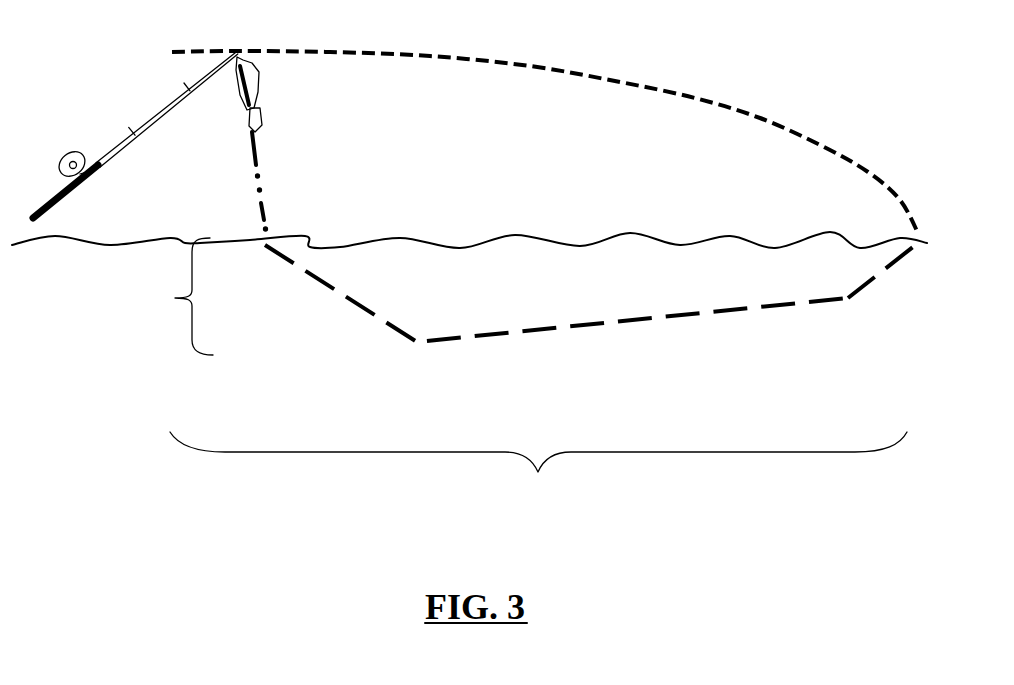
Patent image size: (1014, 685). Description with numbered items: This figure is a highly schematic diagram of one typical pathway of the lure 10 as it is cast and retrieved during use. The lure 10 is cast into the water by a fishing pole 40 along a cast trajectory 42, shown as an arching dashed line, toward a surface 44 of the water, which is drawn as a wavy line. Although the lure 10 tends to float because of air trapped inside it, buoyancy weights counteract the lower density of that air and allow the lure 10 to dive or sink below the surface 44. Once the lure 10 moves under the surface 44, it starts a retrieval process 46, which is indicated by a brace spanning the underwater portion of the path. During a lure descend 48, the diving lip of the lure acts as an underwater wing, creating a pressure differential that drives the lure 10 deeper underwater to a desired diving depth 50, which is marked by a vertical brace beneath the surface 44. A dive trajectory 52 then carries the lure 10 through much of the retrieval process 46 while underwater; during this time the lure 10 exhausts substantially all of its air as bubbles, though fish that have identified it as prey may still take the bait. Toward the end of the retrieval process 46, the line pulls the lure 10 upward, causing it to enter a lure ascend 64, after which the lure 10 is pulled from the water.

The lure 10 is at (262, 78).
The fishing pole 40 is at (143, 122).
The cast trajectory 42 is at (695, 98).
The surface 44 is at (520, 237).
The retrieval process 46 is at (538, 472).
The lure descend 48 is at (872, 285).
The diving depth 50 is at (170, 296).
The dive trajectory 52 is at (648, 323).
The lure ascend 64 is at (350, 302).